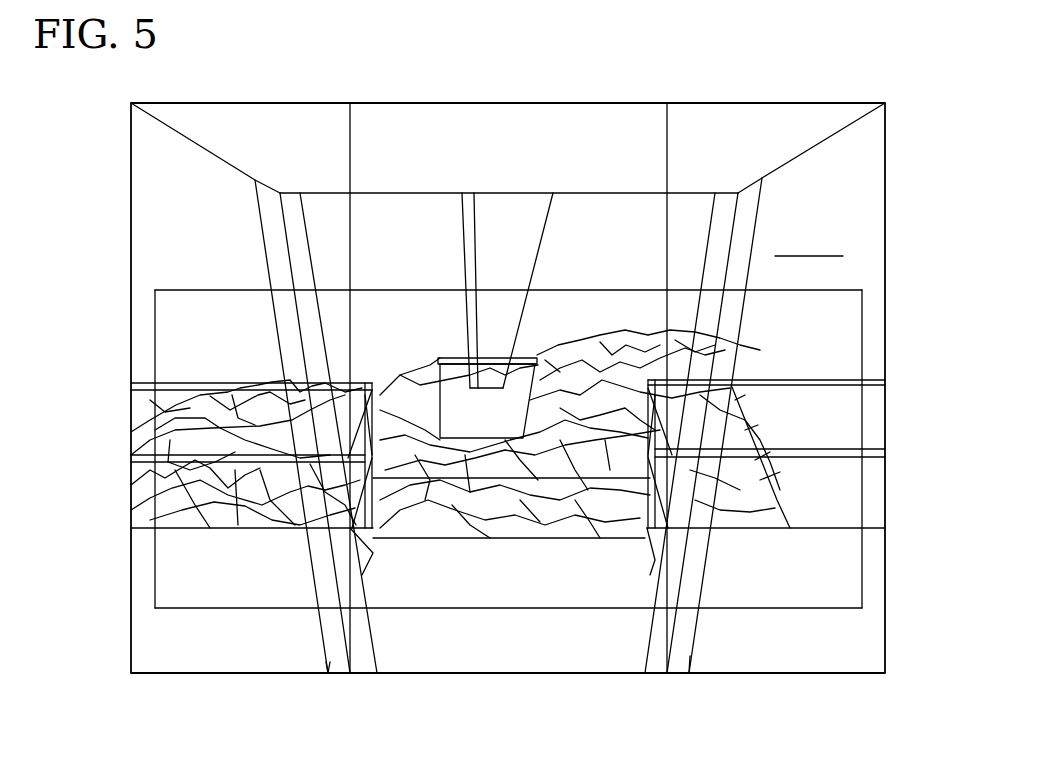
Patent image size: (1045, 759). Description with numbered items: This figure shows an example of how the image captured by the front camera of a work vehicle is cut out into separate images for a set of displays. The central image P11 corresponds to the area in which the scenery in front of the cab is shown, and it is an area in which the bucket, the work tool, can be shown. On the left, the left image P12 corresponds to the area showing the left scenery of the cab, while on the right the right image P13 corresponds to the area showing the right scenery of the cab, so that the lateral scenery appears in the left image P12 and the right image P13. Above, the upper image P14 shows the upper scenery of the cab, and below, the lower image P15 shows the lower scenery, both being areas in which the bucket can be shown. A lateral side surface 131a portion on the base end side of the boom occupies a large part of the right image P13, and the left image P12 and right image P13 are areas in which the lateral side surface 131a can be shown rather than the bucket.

The central image P11 is at (590, 290).
The left image P12 is at (155, 320).
The right image P13 is at (862, 345).
The upper image P14 is at (493, 103).
The lower image P15 is at (505, 674).
The lateral side surface 131a is at (508, 388).